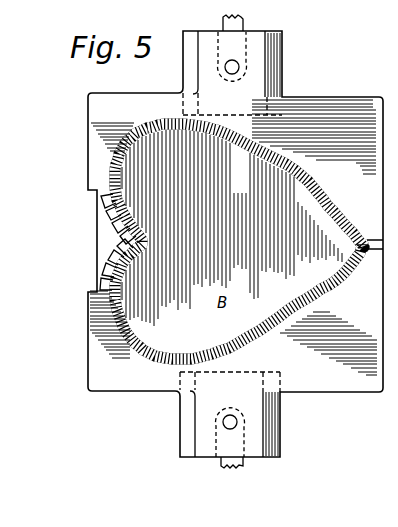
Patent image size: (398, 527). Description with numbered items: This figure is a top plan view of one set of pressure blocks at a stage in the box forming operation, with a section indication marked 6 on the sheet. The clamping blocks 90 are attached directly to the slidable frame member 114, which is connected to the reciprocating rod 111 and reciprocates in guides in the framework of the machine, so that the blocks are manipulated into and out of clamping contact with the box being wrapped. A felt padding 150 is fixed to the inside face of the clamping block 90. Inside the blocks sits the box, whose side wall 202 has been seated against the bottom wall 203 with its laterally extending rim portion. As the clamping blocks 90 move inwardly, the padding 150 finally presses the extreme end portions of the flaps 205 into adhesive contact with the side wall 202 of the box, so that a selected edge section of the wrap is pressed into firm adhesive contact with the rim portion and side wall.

The clamping block 90 is at (329, 96).
The reciprocating rod 111 is at (243, 20).
The slidable frame member 114 is at (258, 58).
The felt padding 150 is at (335, 284).
The box side wall 202 is at (252, 157).
The bottom wall 203 is at (232, 228).
The flaps 205 is at (303, 176).
The section line 6 is at (54, 195).